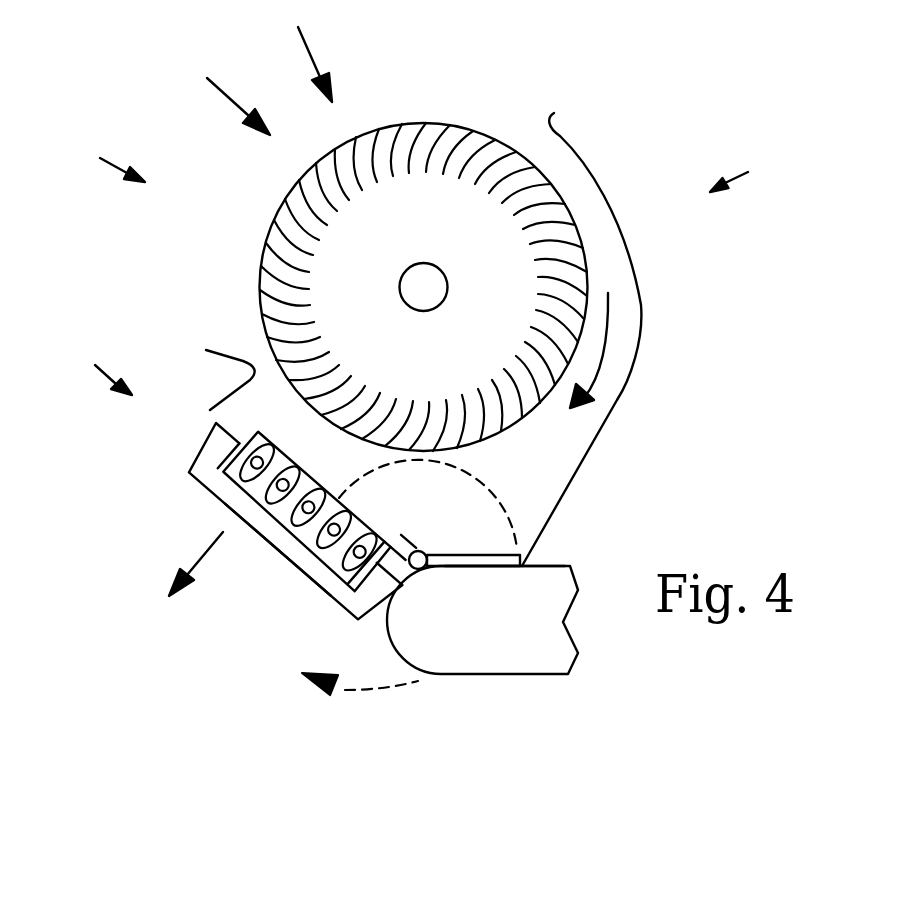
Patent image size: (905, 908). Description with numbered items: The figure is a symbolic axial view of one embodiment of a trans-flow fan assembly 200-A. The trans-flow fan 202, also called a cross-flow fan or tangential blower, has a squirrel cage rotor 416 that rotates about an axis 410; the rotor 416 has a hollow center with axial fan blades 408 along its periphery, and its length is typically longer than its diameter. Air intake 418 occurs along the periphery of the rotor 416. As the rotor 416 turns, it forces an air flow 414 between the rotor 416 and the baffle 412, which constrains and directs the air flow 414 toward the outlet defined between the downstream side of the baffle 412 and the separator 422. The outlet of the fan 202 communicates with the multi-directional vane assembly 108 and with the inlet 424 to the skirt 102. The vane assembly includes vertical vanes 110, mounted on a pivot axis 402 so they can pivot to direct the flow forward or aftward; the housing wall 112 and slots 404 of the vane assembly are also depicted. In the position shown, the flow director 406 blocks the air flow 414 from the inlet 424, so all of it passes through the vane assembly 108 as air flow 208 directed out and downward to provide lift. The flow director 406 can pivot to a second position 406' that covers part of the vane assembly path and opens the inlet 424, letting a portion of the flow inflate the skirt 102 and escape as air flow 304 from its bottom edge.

The skirt 102 is at (493, 676).
The multi-directional vane assembly 108 is at (91, 367).
The vertical vanes 110 is at (198, 466).
The housing wall 112 is at (322, 586).
The trans-flow fan assembly 200-A is at (770, 170).
The trans-flow fan 202 is at (97, 156).
The air flow 208 is at (202, 552).
The air flow 304 is at (342, 690).
The pivot axis 402 is at (212, 425).
The filter slots 404 is at (278, 458).
The flow director 406 is at (469, 518).
The second position 406' is at (428, 505).
The axial fan blades 408 is at (370, 177).
The axis 410 is at (416, 311).
The baffle 412 is at (632, 372).
The air flow 414 is at (610, 321).
The squirrel cage rotor 416 is at (287, 197).
The air intake 418 is at (228, 92).
The separator 422 is at (228, 351).
The inlet 424 is at (470, 567).